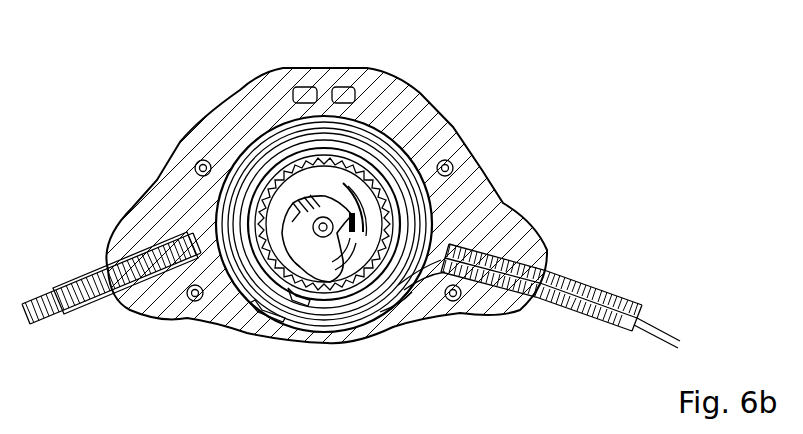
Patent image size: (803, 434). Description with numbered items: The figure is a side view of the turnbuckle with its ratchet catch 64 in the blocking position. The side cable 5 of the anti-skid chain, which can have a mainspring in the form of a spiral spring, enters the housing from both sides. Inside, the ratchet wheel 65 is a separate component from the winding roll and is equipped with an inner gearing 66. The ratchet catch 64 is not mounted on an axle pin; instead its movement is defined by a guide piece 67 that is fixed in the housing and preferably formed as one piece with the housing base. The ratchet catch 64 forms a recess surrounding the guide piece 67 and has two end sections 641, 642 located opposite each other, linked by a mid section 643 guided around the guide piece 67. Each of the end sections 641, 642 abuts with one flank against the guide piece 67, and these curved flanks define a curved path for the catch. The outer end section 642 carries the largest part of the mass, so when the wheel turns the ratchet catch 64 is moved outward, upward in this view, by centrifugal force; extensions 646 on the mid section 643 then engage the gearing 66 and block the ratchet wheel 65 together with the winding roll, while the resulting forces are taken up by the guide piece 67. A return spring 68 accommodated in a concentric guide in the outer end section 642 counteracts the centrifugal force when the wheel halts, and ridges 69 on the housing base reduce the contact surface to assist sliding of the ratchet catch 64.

The side cable 5 is at (569, 272).
The ratchet catch 64 is at (324, 160).
The end section 641 is at (222, 182).
The outer end section 642 is at (371, 127).
The mid section 643 is at (282, 128).
The extensions 646 is at (276, 167).
The ratchet wheel 65 is at (258, 318).
The inner gearing 66 is at (296, 292).
The guide piece 67 is at (303, 245).
The return spring 68 is at (395, 207).
The ridges 69 is at (383, 313).